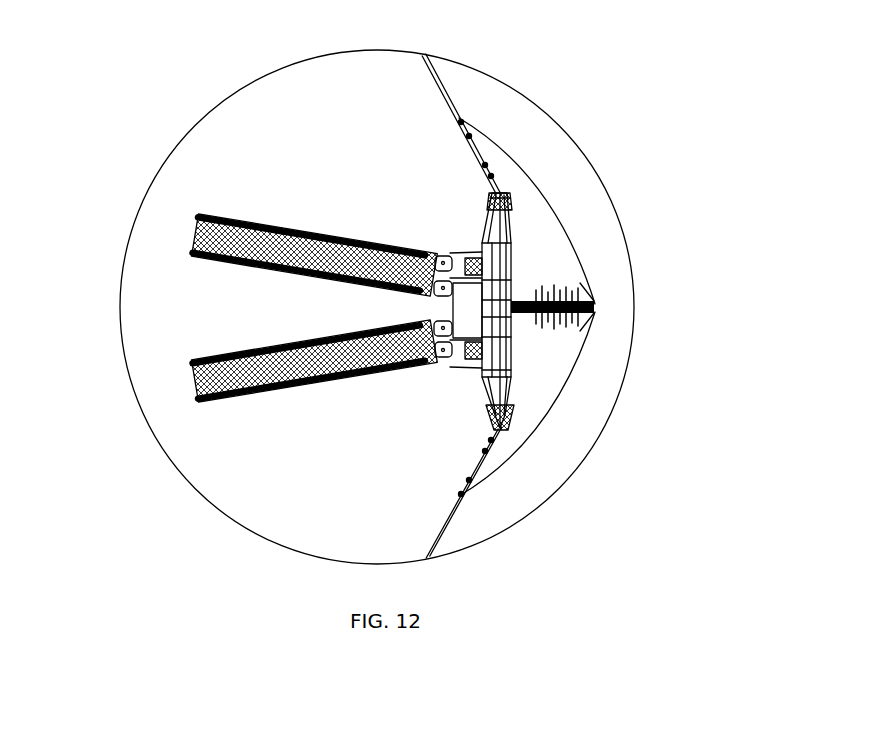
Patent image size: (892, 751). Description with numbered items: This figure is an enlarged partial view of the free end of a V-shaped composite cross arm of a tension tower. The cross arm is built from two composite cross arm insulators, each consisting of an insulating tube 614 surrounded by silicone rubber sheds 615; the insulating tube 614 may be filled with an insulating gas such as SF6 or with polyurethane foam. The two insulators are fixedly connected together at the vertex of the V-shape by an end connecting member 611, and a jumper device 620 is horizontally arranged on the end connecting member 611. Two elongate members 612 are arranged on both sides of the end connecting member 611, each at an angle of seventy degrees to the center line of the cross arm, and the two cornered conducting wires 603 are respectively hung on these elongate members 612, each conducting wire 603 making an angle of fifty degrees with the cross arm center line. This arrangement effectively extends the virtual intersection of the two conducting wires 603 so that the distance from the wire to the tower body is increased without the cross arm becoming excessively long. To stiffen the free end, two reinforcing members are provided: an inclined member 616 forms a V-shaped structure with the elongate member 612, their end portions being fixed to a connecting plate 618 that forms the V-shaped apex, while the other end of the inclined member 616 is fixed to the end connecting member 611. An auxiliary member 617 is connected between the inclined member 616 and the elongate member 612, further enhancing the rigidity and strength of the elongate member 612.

The conducting wire 603 is at (441, 75).
The end connecting member 611 is at (513, 340).
The elongate member 612 is at (523, 240).
The insulating tube 614 is at (200, 215).
The silicone rubber sheds 615 is at (250, 213).
The inclined member 616 is at (475, 236).
The auxiliary member 617 is at (535, 267).
The connecting plate 618 is at (512, 205).
The jumper device 620 is at (595, 308).